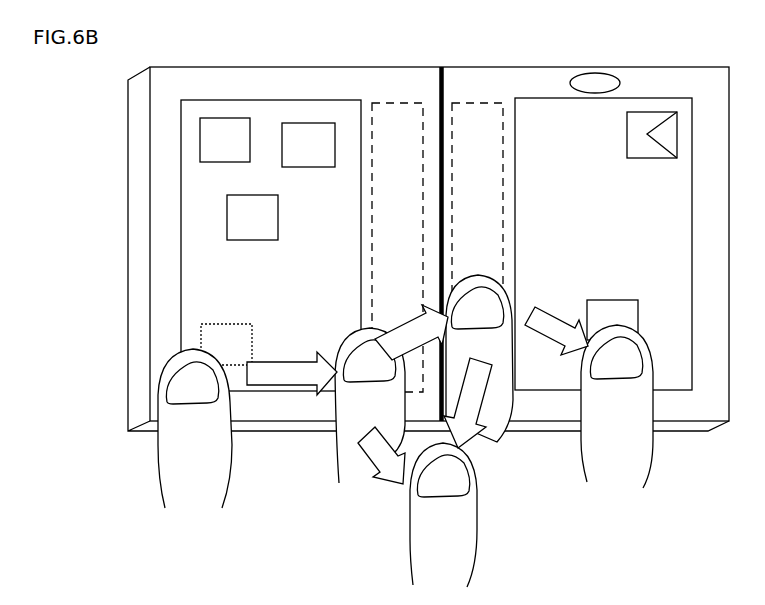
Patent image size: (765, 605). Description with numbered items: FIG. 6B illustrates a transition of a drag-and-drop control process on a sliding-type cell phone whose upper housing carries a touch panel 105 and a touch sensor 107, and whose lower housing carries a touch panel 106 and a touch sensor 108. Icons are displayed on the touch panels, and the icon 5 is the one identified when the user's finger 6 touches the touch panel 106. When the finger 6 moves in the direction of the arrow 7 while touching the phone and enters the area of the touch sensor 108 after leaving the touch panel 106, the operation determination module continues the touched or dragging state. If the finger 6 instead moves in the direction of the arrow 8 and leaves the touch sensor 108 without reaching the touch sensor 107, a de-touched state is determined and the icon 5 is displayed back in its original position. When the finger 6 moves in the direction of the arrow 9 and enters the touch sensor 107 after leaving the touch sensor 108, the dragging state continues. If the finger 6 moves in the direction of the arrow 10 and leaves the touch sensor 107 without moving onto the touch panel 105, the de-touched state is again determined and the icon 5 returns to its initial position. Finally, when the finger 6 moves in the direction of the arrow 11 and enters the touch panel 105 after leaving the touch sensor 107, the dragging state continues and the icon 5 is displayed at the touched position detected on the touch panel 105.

The touch panel 105 is at (547, 110).
The touch panel 106 is at (212, 268).
The touch sensor 107 is at (477, 103).
The touch sensor 108 is at (398, 103).
The icon 5 is at (615, 300).
The finger 6 is at (193, 463).
The arrow 7 is at (300, 370).
The arrow 8 is at (387, 458).
The arrow 9 is at (412, 333).
The arrow 10 is at (508, 425).
The arrow 11 is at (548, 330).